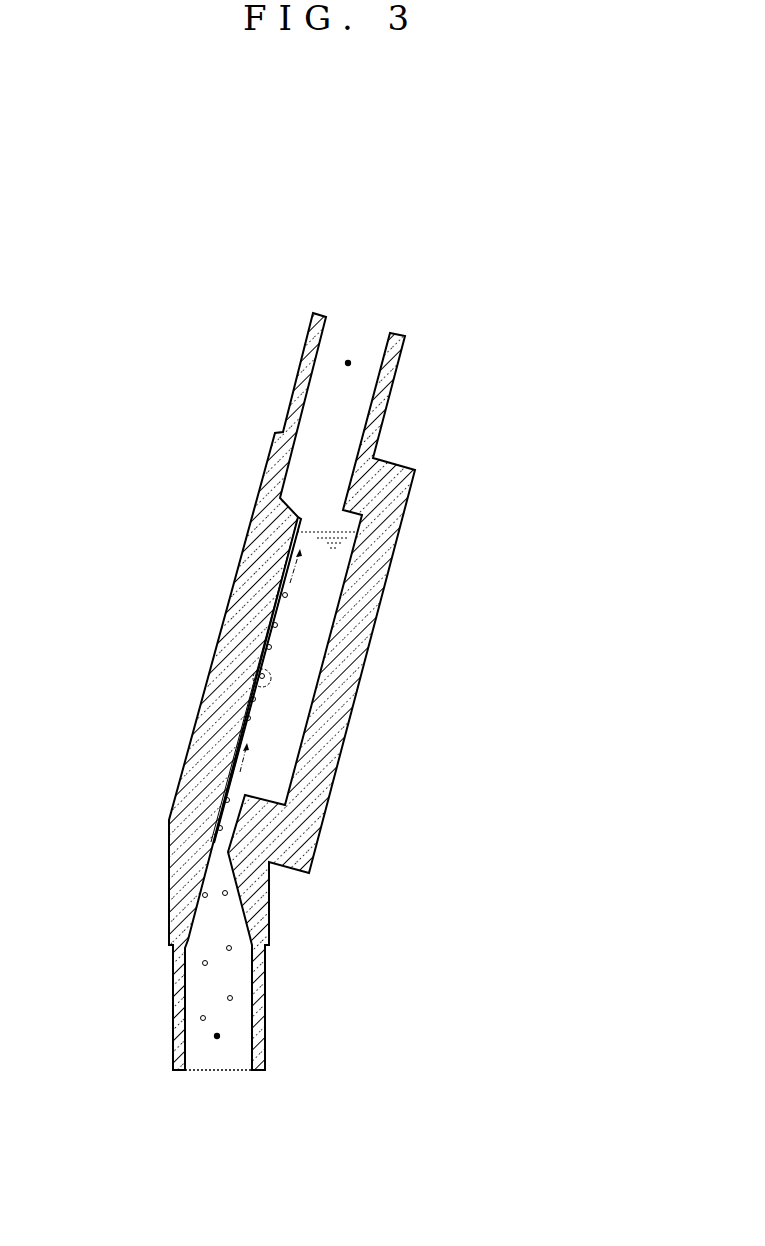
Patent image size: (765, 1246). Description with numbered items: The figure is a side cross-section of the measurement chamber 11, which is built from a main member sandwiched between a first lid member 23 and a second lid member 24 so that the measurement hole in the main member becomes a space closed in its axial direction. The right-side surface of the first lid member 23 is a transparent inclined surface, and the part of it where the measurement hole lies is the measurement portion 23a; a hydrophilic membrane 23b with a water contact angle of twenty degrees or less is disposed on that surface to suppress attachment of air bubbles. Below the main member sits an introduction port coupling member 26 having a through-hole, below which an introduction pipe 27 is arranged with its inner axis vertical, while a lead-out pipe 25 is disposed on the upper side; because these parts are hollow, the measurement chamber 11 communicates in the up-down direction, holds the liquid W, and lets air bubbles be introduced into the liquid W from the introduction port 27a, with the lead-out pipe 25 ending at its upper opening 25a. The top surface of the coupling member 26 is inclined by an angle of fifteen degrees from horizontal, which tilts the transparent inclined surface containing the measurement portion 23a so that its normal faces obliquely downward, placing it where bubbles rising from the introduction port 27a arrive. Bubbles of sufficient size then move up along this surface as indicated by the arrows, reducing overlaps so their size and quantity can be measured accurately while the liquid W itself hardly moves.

The measurement chamber 11 is at (448, 268).
The first lid member 23 is at (258, 543).
The measurement portion 23a is at (253, 692).
The hydrophilic membrane 23b is at (273, 605).
The second lid member 24 is at (338, 682).
The lead-out pipe 25 is at (388, 397).
The inlet opening 25a is at (348, 363).
The introduction port coupling member 26 is at (258, 928).
The introduction pipe 27 is at (257, 1017).
The introduction port 27a is at (217, 1036).
The liquid W is at (322, 587).